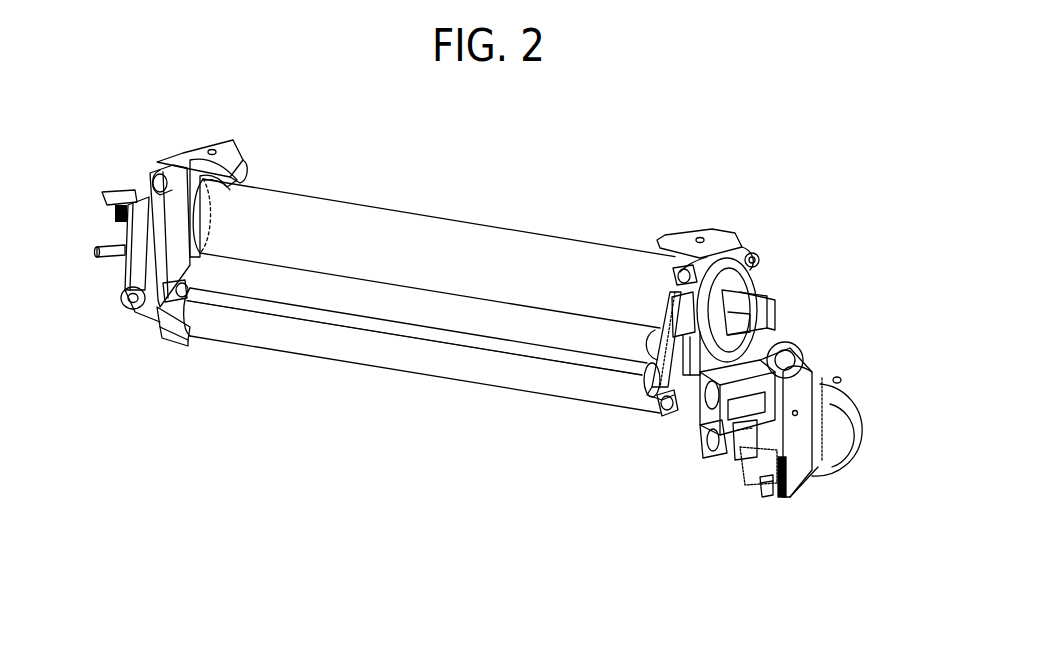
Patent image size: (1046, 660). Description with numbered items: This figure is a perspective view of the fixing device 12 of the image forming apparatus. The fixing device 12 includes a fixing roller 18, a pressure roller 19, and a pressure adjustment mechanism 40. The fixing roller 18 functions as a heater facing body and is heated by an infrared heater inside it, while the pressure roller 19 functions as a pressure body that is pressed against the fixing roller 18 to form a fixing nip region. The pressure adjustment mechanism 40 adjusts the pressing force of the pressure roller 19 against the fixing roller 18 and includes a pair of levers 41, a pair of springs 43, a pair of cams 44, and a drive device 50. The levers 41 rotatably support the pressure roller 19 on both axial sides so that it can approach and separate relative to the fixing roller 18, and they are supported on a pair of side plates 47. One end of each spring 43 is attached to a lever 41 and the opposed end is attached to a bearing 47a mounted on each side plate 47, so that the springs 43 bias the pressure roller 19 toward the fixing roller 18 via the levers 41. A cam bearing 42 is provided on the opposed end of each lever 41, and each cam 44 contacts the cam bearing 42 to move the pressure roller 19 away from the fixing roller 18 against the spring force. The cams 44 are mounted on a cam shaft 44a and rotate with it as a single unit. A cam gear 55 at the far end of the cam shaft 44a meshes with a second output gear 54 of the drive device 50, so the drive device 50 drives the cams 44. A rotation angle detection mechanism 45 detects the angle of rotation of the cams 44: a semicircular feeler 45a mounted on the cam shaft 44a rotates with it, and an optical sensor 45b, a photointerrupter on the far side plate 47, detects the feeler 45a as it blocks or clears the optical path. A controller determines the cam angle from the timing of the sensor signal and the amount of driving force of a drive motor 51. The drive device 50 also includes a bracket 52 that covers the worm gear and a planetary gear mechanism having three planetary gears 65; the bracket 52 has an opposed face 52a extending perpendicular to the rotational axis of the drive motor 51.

The fixing device 12 is at (733, 188).
The fixing roller 18 is at (442, 230).
The pressure roller 19 is at (460, 367).
The pressure adjustment mechanism 40 is at (812, 278).
The pair of levers 41 is at (160, 338).
The cam bearing 42 is at (170, 317).
The pair of springs 43 is at (150, 235).
The pair of cams 44 is at (170, 300).
The cam shaft 44a is at (362, 322).
The rotation angle detection mechanism 45 is at (752, 512).
The feeler 45a is at (710, 445).
The optical sensor 45b is at (722, 445).
The pair of side plates 47 is at (210, 150).
The bearing 47a is at (165, 175).
The drive device 50 is at (827, 488).
The drive motor 51 is at (857, 427).
The bracket 52 is at (788, 500).
The opposed face 52a is at (767, 494).
The second output gear 54 is at (728, 368).
The cam gear 55 is at (700, 397).
The planetary gears 65 is at (783, 352).